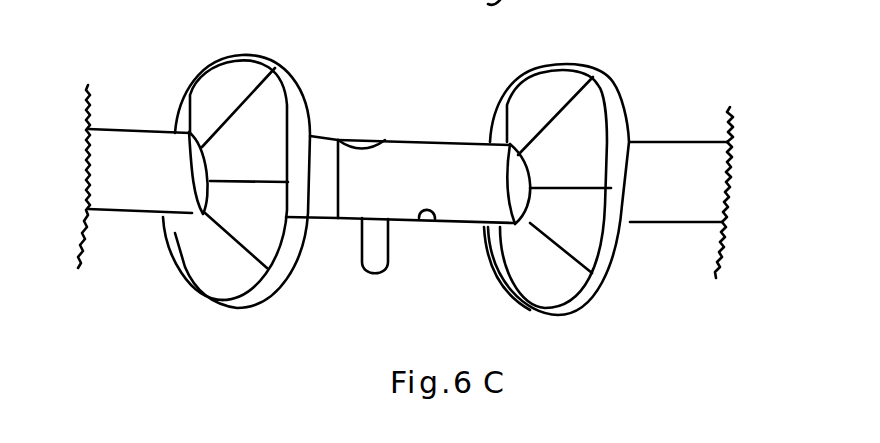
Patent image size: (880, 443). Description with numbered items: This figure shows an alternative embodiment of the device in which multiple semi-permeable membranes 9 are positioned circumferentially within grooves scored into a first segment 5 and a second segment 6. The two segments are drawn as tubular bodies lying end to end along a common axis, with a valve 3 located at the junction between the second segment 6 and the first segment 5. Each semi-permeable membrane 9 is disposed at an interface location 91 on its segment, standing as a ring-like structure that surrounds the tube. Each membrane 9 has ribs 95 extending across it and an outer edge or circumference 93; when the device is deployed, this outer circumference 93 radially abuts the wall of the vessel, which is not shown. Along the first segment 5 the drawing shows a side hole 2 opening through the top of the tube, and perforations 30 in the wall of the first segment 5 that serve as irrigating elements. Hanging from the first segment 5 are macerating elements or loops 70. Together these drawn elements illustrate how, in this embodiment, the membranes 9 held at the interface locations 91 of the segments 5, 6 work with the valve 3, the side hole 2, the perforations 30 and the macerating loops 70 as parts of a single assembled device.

The side hole 2 is at (360, 140).
The valve 3 is at (335, 194).
The first segment 5 is at (413, 140).
The second segment 6 is at (133, 205).
The semi-permeable membrane 9 is at (255, 67).
The perforations 30 is at (427, 220).
The macerating elements or loops 70 is at (373, 277).
The interface locations 91 is at (196, 214).
The outer edge or circumference 93 is at (290, 62).
The ribs 95 is at (220, 70).